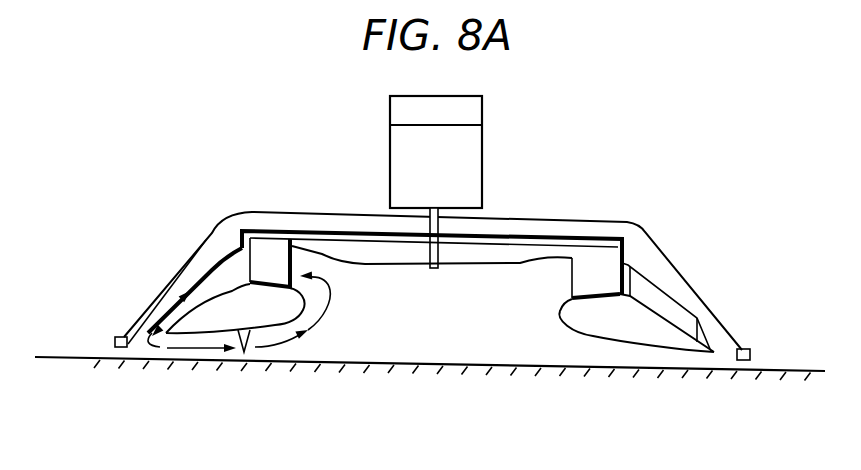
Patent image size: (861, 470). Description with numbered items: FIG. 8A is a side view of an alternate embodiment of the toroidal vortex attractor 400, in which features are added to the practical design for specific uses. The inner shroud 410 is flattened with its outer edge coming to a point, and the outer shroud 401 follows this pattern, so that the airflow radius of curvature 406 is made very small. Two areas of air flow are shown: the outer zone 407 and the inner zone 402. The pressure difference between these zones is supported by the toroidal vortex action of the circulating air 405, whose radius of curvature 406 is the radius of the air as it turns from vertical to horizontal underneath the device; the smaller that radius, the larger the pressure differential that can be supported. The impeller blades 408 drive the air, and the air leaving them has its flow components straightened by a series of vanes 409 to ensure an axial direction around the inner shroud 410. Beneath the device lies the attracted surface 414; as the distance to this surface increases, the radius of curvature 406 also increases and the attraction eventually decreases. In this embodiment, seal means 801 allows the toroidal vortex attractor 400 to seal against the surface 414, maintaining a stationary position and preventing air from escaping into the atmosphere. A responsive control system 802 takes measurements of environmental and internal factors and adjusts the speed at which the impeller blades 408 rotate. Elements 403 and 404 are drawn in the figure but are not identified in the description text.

The toroidal vortex attractor 400 is at (745, 177).
The outer shroud 401 is at (633, 238).
The inner zone 402 is at (511, 315).
The fan / motor housing 403 is at (484, 150).
The support plate 404 is at (390, 262).
The circulating air 405 is at (240, 352).
The airflow radius of curvature 406 is at (163, 330).
The outer zone 407 is at (200, 272).
The impeller blades 408 is at (268, 262).
The vanes 409 is at (672, 298).
The inner shroud 410 is at (650, 322).
The attracted surface 414 is at (553, 368).
The seal means 801 is at (114, 341).
The responsive control system 802 is at (390, 117).